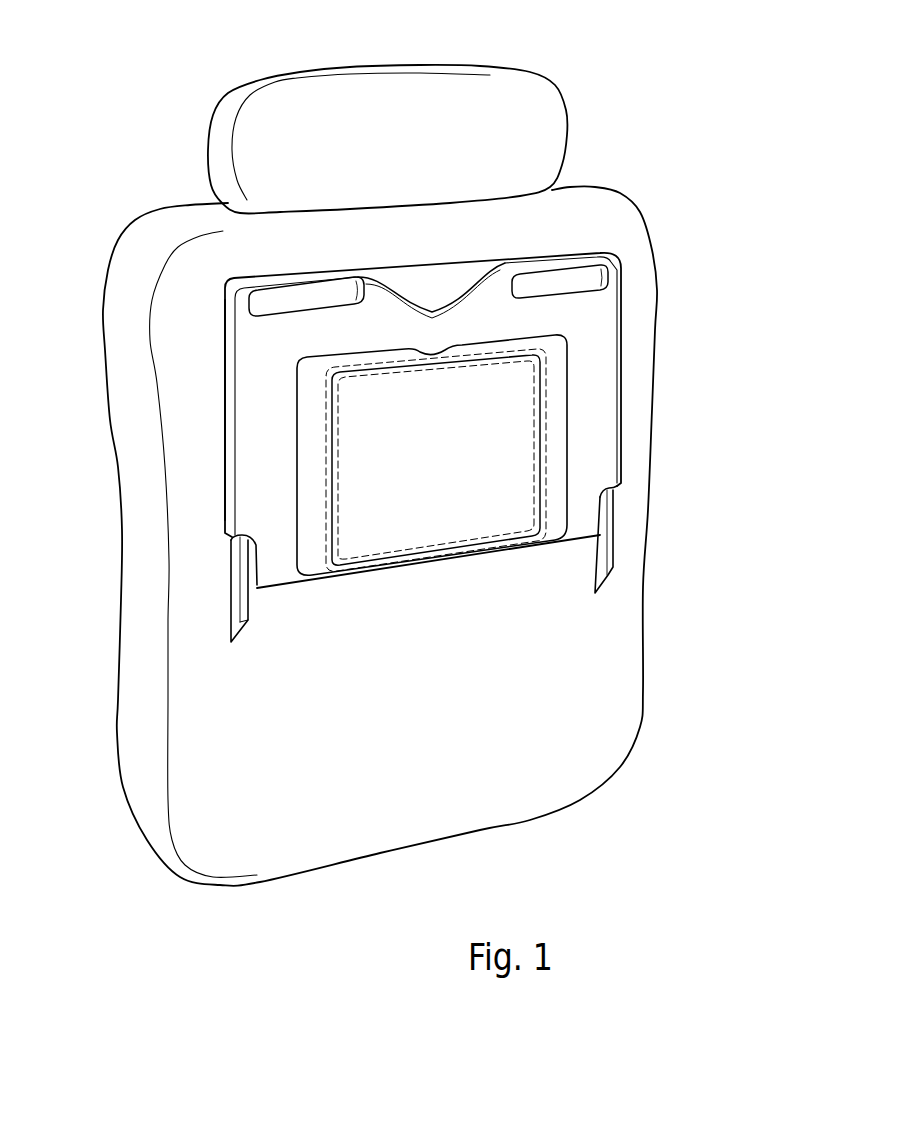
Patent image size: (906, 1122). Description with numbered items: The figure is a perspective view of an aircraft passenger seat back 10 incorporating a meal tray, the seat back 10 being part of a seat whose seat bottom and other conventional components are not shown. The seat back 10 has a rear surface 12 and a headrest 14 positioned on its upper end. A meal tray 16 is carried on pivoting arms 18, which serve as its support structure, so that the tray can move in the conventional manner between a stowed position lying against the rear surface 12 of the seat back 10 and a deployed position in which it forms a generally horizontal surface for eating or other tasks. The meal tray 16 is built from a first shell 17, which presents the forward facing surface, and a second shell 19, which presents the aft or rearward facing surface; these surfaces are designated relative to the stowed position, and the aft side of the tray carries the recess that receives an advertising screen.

The seat back 10 is at (580, 207).
The rear surface 12 is at (238, 242).
The headrest 14 is at (515, 90).
The meal tray 16 is at (617, 236).
The first shell 17 is at (223, 407).
The pivoting arms 18 is at (237, 601).
The second shell 19 is at (602, 397).